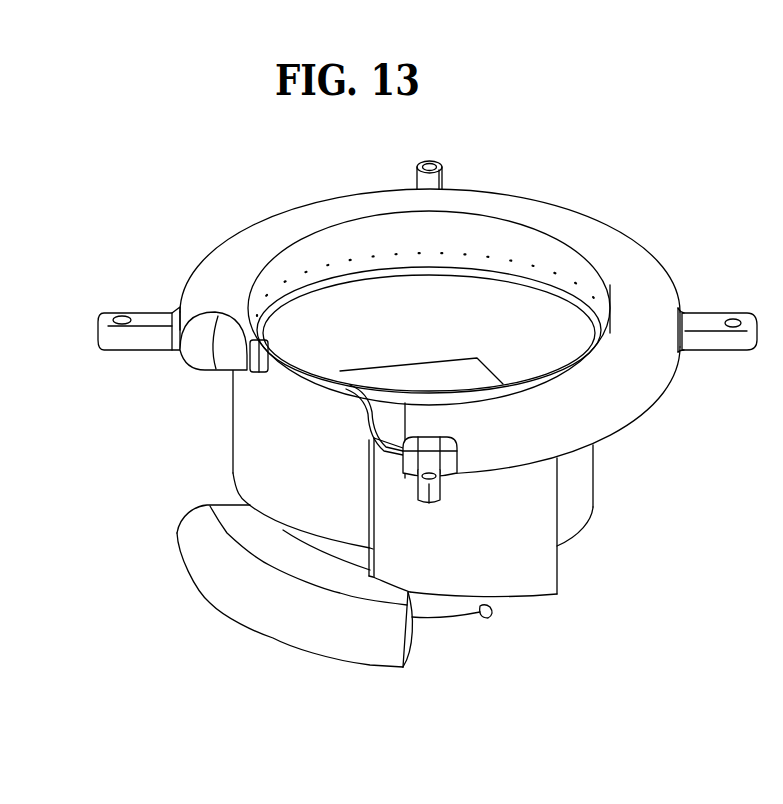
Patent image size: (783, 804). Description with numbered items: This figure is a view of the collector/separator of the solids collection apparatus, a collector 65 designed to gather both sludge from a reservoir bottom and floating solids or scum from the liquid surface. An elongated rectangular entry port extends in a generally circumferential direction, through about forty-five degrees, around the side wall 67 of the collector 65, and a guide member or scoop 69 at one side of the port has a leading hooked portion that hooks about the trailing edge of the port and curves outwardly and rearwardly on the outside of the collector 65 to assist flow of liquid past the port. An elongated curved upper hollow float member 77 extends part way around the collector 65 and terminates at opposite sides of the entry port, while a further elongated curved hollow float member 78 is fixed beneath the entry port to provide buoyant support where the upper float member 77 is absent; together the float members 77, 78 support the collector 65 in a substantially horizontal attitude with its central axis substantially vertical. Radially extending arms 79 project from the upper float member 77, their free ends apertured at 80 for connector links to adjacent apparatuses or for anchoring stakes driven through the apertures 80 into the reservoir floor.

The collector 65 is at (560, 185).
The side wall 67 is at (252, 423).
The guide member or scoop 69 is at (528, 543).
The upper hollow float member 77 is at (635, 268).
The hollow float member 78 is at (367, 643).
The radially extending arm 79 is at (437, 178).
The aperture 80 is at (420, 165).